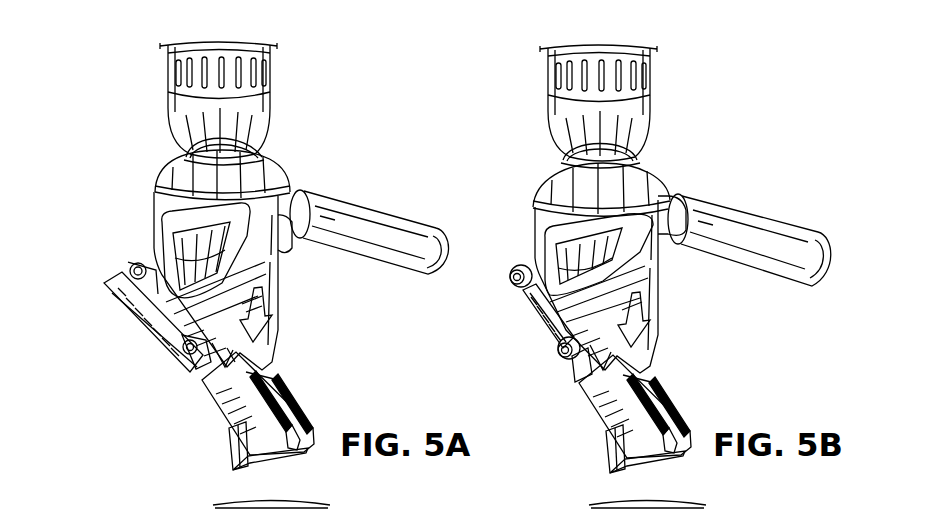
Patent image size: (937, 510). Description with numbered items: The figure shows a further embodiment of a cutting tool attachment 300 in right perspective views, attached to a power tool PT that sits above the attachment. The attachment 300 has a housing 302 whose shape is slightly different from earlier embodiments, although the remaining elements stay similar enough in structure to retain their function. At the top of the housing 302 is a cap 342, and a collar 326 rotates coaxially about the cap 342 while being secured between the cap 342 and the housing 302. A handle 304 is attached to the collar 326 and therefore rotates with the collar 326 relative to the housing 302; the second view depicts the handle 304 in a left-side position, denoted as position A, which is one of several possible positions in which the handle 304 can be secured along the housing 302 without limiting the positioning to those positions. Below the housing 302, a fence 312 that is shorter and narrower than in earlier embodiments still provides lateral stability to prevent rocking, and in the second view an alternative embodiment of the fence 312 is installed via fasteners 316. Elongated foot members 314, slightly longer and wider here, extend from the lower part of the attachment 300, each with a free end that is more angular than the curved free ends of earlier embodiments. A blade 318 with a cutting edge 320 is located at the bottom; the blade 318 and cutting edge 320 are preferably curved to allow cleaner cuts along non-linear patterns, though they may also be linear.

In FIG. 5A, the power tool PT is at (286, 81).
In FIG. 5B, the power tool PT is at (534, 82).
In FIG. 5A, the cutting tool attachment 300 is at (316, 163).
In FIG. 5B, the cutting tool attachment 300 is at (706, 164).
In FIG. 5A, the housing 302 is at (153, 218).
In FIG. 5B, the housing 302 is at (652, 301).
In FIG. 5A, the handle 304 is at (425, 233).
In FIG. 5B, the handle 304 is at (812, 235).
In FIG. 5A, the fence 312 is at (104, 280).
In FIG. 5B, the fence 312 is at (537, 307).
In FIG. 5A, the elongated foot member 314 is at (207, 384).
In FIG. 5B, the elongated foot member 314 is at (597, 410).
In FIG. 5A, the fastener 316 is at (186, 352).
In FIG. 5B, the fastener 316 is at (511, 268).
In FIG. 5A, the blade 318 is at (227, 447).
In FIG. 5B, the blade 318 is at (607, 463).
In FIG. 5A, the cutting edge 320 is at (252, 463).
In FIG. 5B, the cutting edge 320 is at (630, 466).
In FIG. 5A, the collar 326 is at (156, 173).
In FIG. 5B, the collar 326 is at (538, 185).
In FIG. 5A, the cap 342 is at (178, 157).
In FIG. 5B, the cap 342 is at (558, 163).
In FIG. 5B, the position A is at (815, 290).